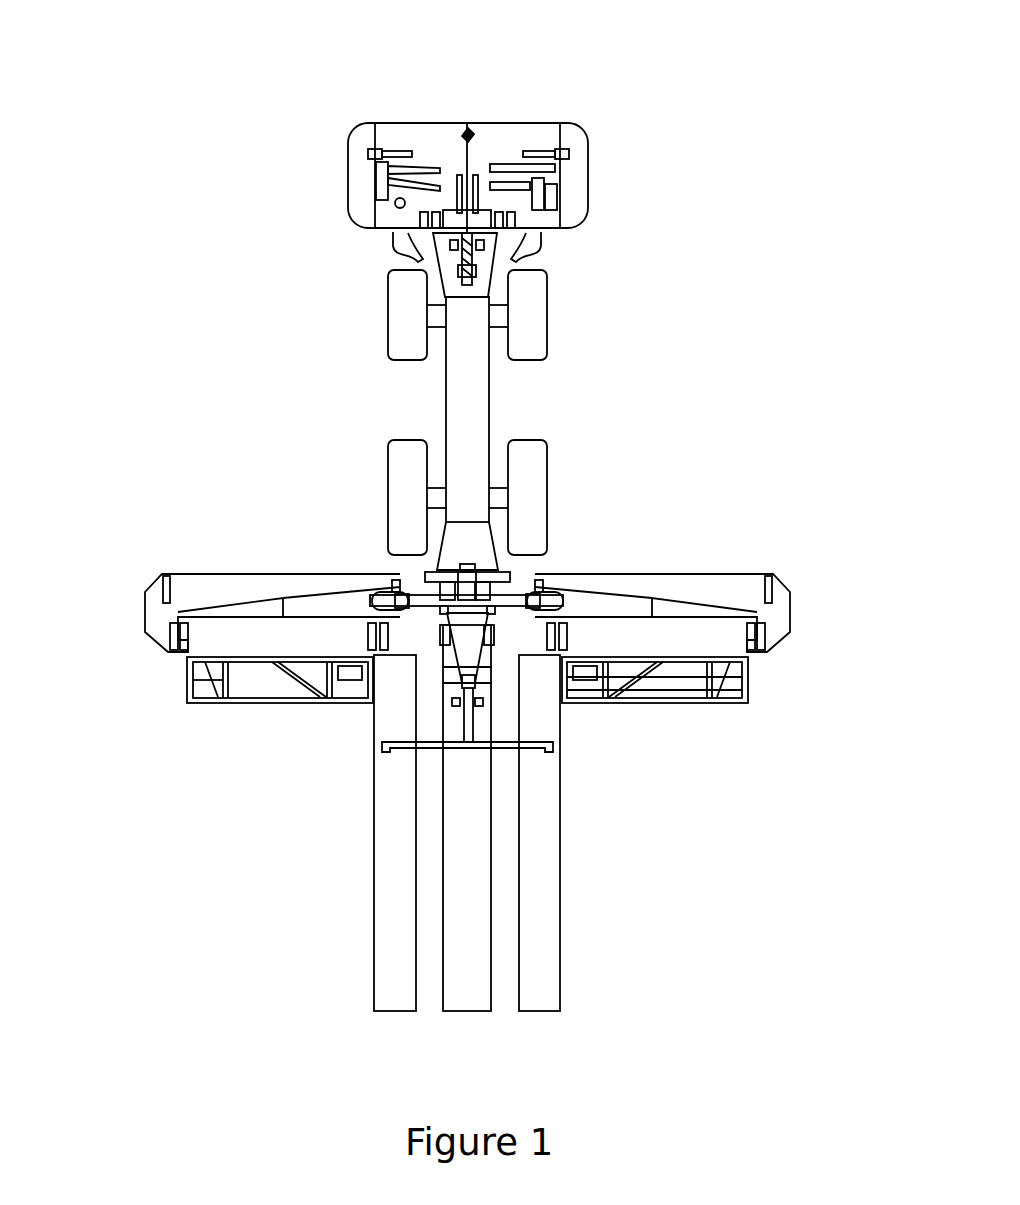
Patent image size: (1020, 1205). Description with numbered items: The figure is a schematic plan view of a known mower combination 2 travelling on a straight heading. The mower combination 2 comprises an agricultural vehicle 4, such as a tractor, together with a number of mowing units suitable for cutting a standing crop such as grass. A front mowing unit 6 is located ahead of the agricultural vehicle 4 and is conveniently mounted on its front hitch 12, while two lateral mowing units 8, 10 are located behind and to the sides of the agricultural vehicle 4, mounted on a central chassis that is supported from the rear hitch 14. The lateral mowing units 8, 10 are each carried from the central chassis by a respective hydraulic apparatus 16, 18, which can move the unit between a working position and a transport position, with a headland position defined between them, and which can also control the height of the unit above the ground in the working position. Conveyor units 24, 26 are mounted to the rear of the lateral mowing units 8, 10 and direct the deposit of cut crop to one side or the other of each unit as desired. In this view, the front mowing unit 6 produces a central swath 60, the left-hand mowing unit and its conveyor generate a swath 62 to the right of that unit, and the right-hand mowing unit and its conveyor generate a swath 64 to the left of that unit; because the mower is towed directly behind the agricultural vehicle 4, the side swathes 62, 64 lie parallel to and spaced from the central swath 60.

The mower combination 2 is at (713, 245).
The agricultural vehicle 4 is at (512, 393).
The front mowing unit 6 is at (604, 119).
The lateral mowing unit 8 is at (132, 604).
The lateral mowing unit 10 is at (812, 606).
The front hitch 12 is at (497, 260).
The rear hitch 14 is at (514, 578).
The hydraulic apparatus 16 is at (386, 578).
The hydraulic apparatus 18 is at (545, 578).
The conveyor unit 24 is at (185, 690).
The conveyor unit 26 is at (748, 688).
The swath 60 is at (478, 846).
The swath 62 is at (394, 930).
The swath 64 is at (545, 940).